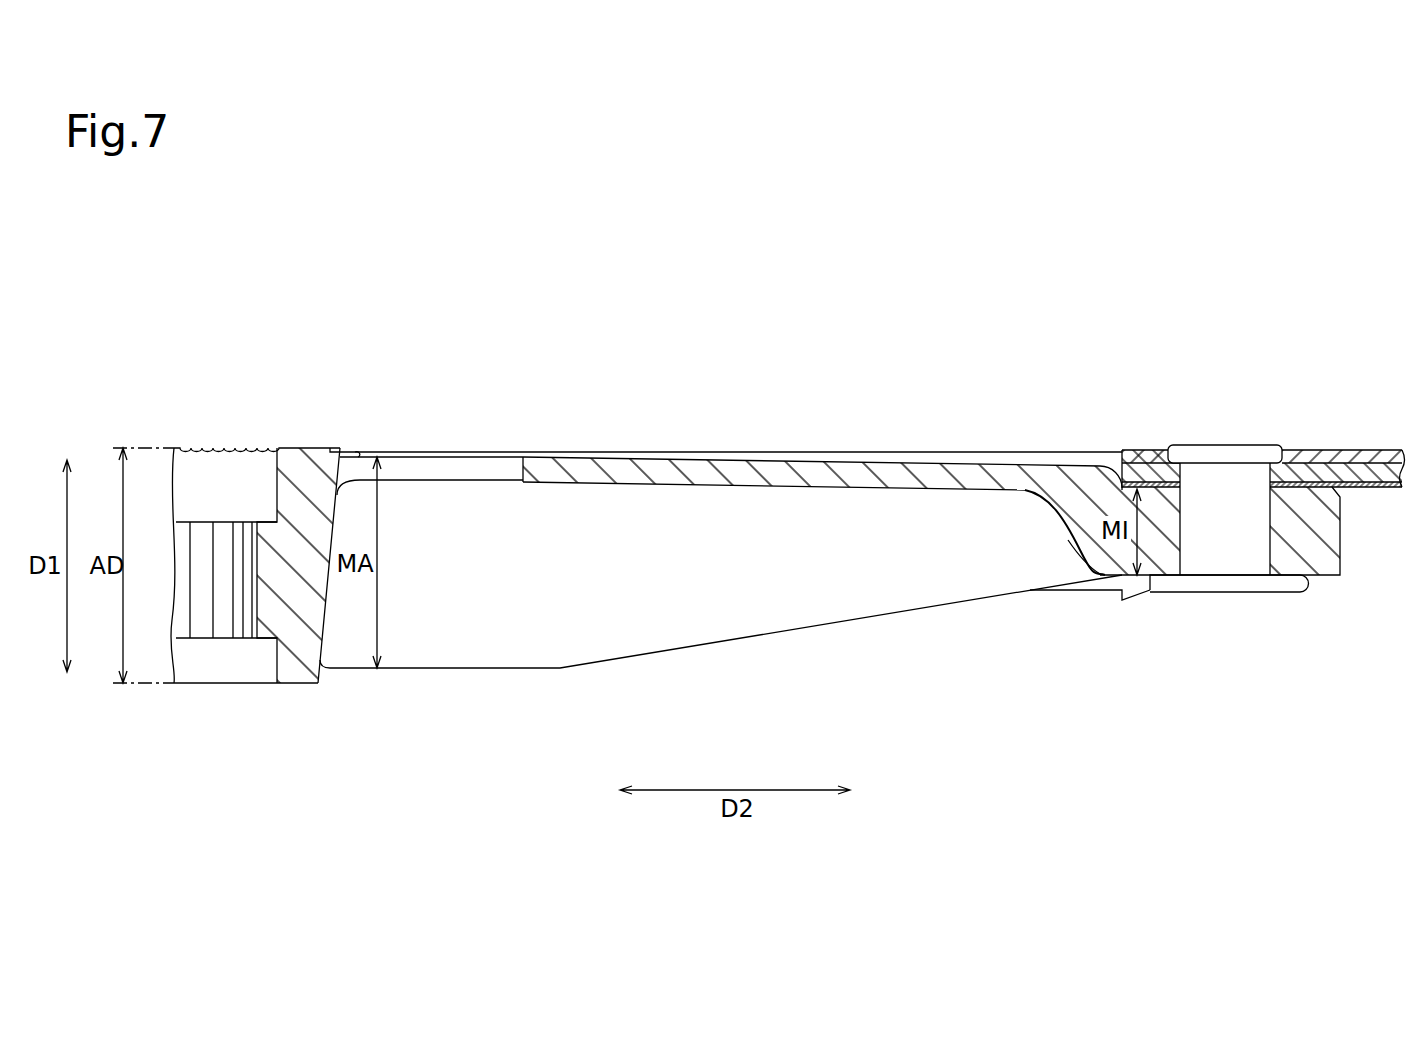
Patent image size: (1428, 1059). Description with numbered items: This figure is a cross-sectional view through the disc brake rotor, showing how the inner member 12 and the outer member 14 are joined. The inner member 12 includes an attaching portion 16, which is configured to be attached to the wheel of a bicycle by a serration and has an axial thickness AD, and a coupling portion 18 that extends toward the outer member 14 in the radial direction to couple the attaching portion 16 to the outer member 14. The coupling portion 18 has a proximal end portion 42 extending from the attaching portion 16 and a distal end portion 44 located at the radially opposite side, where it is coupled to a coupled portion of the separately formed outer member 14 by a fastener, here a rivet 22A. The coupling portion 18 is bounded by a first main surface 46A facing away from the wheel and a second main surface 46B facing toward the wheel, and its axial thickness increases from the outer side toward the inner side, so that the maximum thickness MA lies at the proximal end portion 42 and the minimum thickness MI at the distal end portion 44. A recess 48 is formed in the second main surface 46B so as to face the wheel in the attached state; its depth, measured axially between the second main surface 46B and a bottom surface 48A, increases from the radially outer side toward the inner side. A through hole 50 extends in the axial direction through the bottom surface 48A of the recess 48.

The inner member 12 is at (992, 377).
The outer member 14 is at (1367, 450).
The attaching portion 16 is at (213, 446).
The coupling portion 18 is at (775, 460).
The rivet 22A is at (1218, 445).
The proximal end portion 42 is at (412, 452).
The distal end portion 44 is at (1087, 465).
The first main surface 46A is at (494, 452).
The second main surface 46B is at (487, 672).
The recess 48 is at (735, 563).
The bottom surface 48A is at (722, 488).
The through hole 50 is at (523, 472).